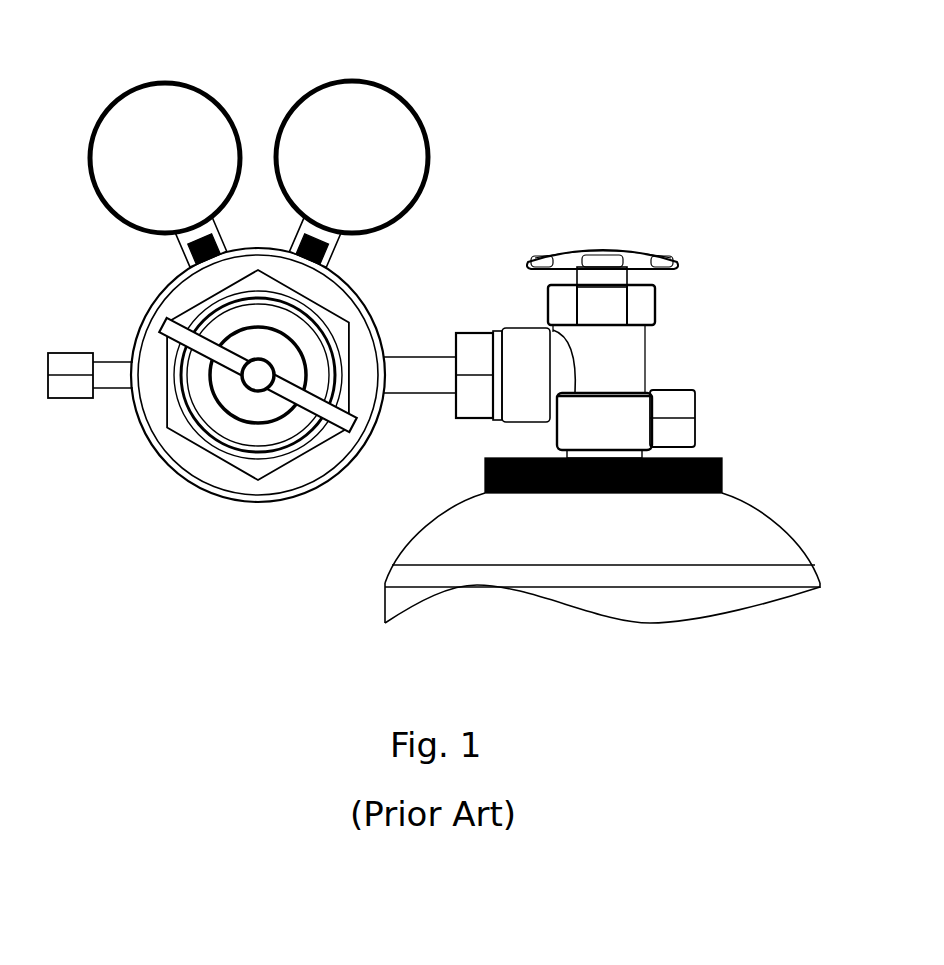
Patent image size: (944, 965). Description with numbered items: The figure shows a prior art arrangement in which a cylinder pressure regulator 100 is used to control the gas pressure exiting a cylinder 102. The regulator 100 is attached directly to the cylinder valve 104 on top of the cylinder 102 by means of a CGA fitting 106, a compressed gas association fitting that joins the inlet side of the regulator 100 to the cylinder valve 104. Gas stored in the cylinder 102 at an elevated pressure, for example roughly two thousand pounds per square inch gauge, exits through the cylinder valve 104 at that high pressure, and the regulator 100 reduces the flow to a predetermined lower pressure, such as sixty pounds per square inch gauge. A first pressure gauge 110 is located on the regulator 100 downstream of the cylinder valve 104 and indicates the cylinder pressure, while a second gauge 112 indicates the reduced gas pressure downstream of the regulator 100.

The cylinder pressure regulator 100 is at (150, 490).
The cylinder 102 is at (748, 528).
The cylinder valve 104 is at (710, 278).
The CGA fitting 106 is at (476, 305).
The first pressure gauge 110 is at (400, 123).
The second pressure gauge 112 is at (170, 93).